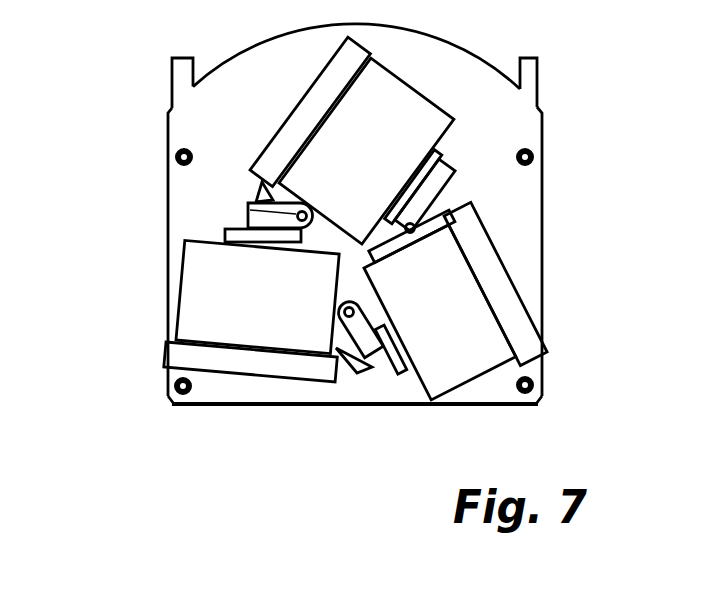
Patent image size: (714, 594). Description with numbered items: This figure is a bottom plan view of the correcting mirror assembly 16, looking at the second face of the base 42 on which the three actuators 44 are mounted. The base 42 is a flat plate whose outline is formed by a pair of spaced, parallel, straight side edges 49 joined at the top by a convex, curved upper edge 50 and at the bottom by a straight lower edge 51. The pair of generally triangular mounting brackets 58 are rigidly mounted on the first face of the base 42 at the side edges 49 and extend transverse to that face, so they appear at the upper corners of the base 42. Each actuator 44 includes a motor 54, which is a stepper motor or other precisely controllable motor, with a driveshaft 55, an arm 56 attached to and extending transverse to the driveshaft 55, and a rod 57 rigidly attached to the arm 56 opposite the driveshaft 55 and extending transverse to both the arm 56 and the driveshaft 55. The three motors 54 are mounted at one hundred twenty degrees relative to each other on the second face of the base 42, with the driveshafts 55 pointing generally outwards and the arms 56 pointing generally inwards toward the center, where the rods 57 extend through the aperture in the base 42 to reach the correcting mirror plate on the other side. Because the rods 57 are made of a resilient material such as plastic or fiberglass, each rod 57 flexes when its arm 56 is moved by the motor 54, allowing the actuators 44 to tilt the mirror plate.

The correcting mirror assembly 16 is at (120, 67).
The base 42 is at (363, 242).
The actuator 44 is at (493, 329).
The side edges 49 is at (542, 265).
The upper edge 50 is at (243, 52).
The lower edge 51 is at (272, 407).
The motor 54 is at (467, 367).
The driveshaft 55 is at (353, 367).
The arm 56 is at (372, 367).
The rod 57 is at (250, 210).
The mounting brackets 58 is at (530, 72).